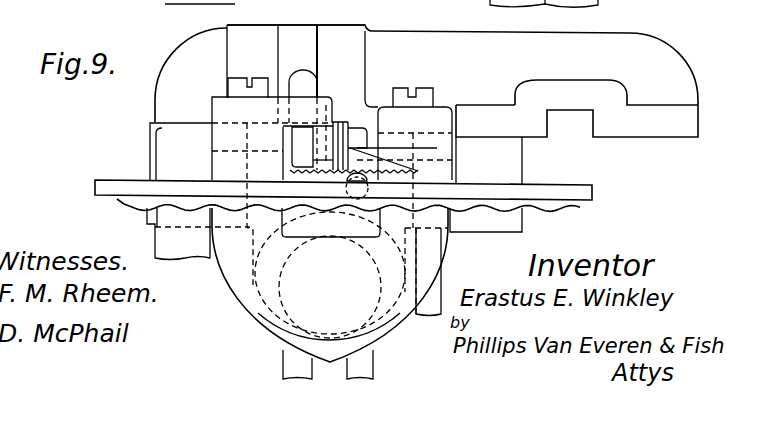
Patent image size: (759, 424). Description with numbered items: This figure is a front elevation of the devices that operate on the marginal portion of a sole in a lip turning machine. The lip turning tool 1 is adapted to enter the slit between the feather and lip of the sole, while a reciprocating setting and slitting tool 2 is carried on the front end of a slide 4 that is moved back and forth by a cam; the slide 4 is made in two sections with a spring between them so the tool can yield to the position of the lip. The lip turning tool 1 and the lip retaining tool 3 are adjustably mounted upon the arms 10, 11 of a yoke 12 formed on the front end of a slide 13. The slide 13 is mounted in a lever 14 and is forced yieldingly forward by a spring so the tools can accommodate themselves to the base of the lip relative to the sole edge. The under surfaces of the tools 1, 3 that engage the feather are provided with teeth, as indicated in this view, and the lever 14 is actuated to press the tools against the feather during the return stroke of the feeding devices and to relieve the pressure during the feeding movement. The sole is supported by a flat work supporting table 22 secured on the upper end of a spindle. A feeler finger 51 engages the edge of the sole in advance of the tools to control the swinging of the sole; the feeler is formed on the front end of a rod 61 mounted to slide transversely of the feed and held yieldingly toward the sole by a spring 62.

The lip turning tool 1 is at (437, 148).
The setting and slitting tool 2 is at (345, 122).
The lip retaining tool 3 is at (232, 109).
The slide 4 is at (306, 34).
The arm of yoke 10 is at (445, 181).
The arm of yoke 11 is at (222, 160).
The yoke 12 is at (385, 308).
The slide 13 is at (292, 283).
The lever 14 is at (382, 340).
The work supporting table 22 is at (552, 192).
The feeler finger 51 is at (355, 195).
The rod 61 is at (154, 0).
The spring 62 is at (29, 8).